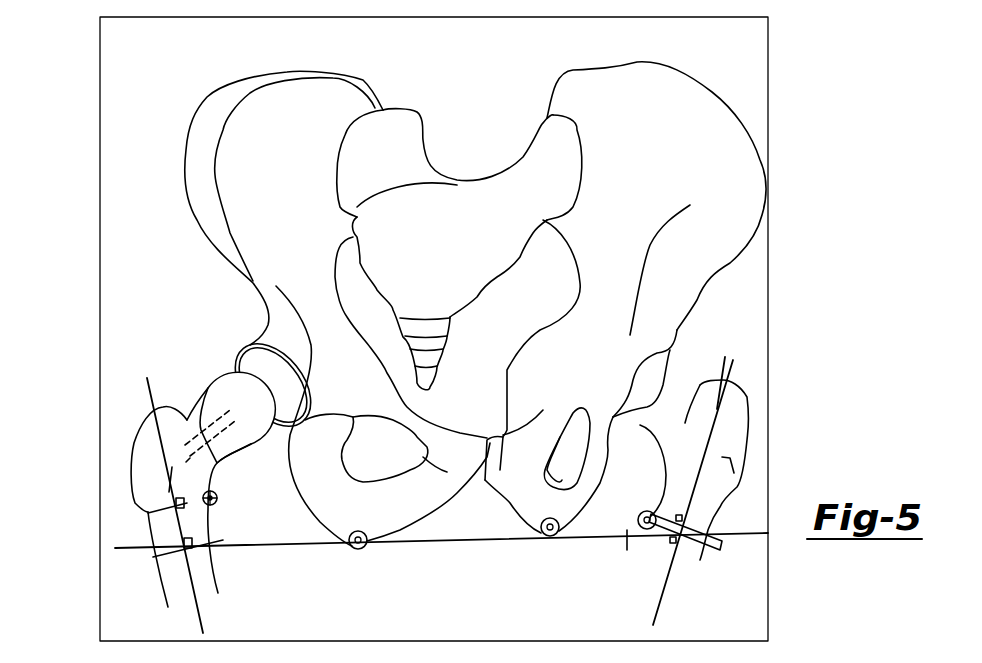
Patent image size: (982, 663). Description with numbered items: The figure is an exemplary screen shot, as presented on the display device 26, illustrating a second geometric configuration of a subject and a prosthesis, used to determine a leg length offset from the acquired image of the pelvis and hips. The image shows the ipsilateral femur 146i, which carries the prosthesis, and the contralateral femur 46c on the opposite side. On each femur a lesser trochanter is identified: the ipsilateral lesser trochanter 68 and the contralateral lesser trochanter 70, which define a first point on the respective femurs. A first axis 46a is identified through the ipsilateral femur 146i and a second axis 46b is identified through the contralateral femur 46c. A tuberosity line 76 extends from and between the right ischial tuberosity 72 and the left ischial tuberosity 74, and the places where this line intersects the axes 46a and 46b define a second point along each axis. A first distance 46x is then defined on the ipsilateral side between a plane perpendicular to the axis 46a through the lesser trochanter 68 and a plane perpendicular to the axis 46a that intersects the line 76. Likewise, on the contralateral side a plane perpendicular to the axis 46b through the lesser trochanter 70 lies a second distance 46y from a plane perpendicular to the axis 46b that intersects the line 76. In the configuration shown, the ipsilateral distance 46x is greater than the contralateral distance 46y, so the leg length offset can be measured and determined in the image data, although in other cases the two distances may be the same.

The display device 26 is at (772, 76).
The first axis 46a is at (147, 392).
The second axis 46b is at (733, 373).
The contralateral femur 46c is at (760, 438).
The first distance 46x is at (153, 535).
The second distance 46y is at (710, 533).
The ipsilateral lesser trochanter 68 is at (217, 500).
The contralateral lesser trochanter 70 is at (647, 530).
The right ischial tuberosity 72 is at (358, 549).
The left ischial tuberosity 74 is at (549, 537).
The tuberosity line 76 is at (470, 543).
The implanted femoral component 146i is at (120, 489).